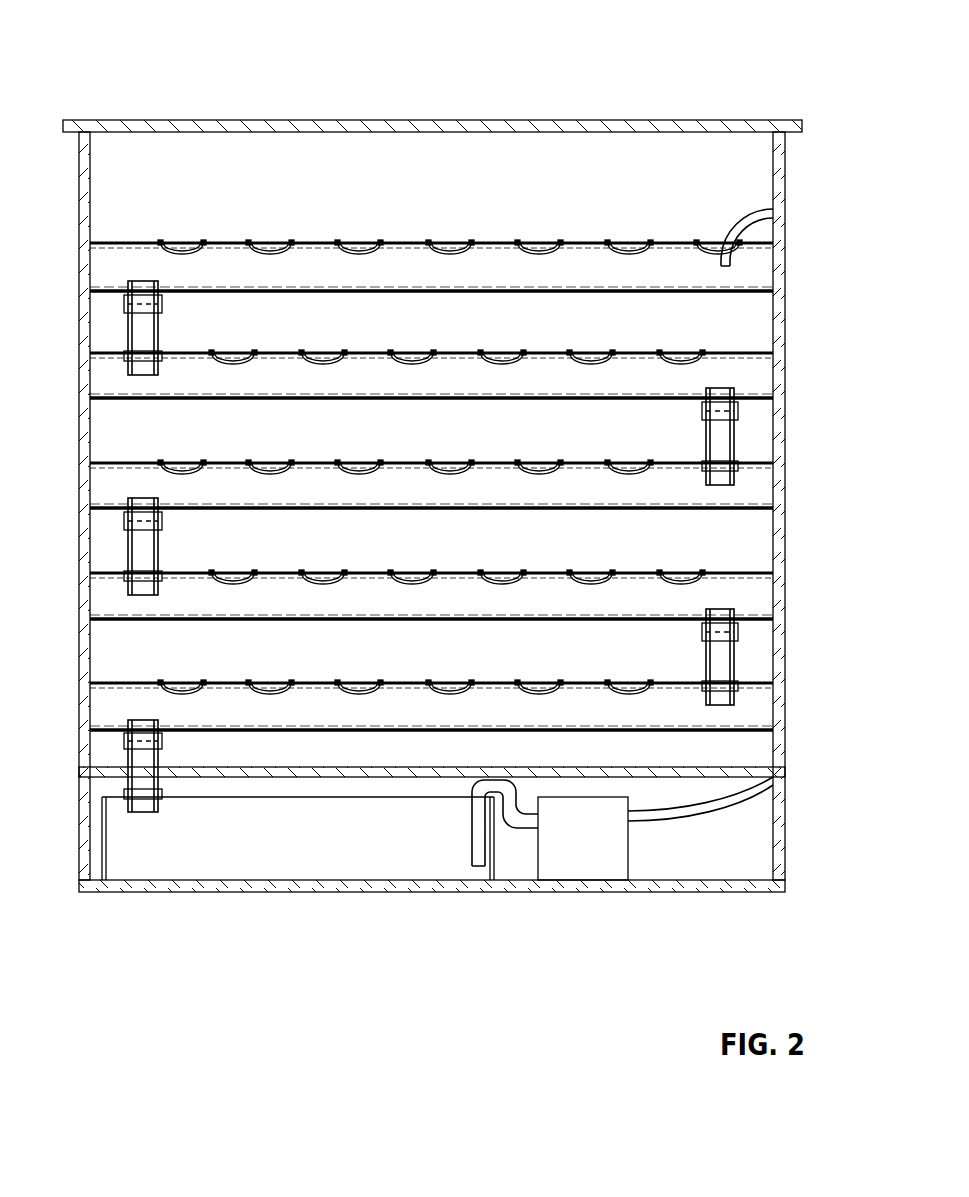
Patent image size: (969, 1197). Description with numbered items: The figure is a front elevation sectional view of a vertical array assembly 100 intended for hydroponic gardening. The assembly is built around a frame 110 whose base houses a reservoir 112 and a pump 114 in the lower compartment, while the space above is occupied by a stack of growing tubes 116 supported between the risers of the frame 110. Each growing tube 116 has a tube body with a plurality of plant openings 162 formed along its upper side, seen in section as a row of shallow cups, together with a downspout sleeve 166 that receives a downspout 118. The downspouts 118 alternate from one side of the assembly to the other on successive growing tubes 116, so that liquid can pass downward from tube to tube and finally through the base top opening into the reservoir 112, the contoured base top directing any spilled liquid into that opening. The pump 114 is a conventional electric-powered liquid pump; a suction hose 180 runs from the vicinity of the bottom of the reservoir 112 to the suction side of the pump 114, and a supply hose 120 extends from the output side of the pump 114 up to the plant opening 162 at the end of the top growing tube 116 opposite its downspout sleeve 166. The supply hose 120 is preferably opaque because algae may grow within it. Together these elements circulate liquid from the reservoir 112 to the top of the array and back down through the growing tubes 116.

The vertical array assembly 100 is at (501, 80).
The frame 110 is at (599, 112).
The reservoir 112 is at (295, 873).
The pump 114 is at (580, 860).
The growing tube 116 is at (315, 222).
The downspout 118 is at (158, 330).
The supply hose 120 is at (745, 211).
The plant opening 162 is at (360, 234).
The downspout sleeve 166 is at (121, 300).
The suction hose 180 is at (508, 803).